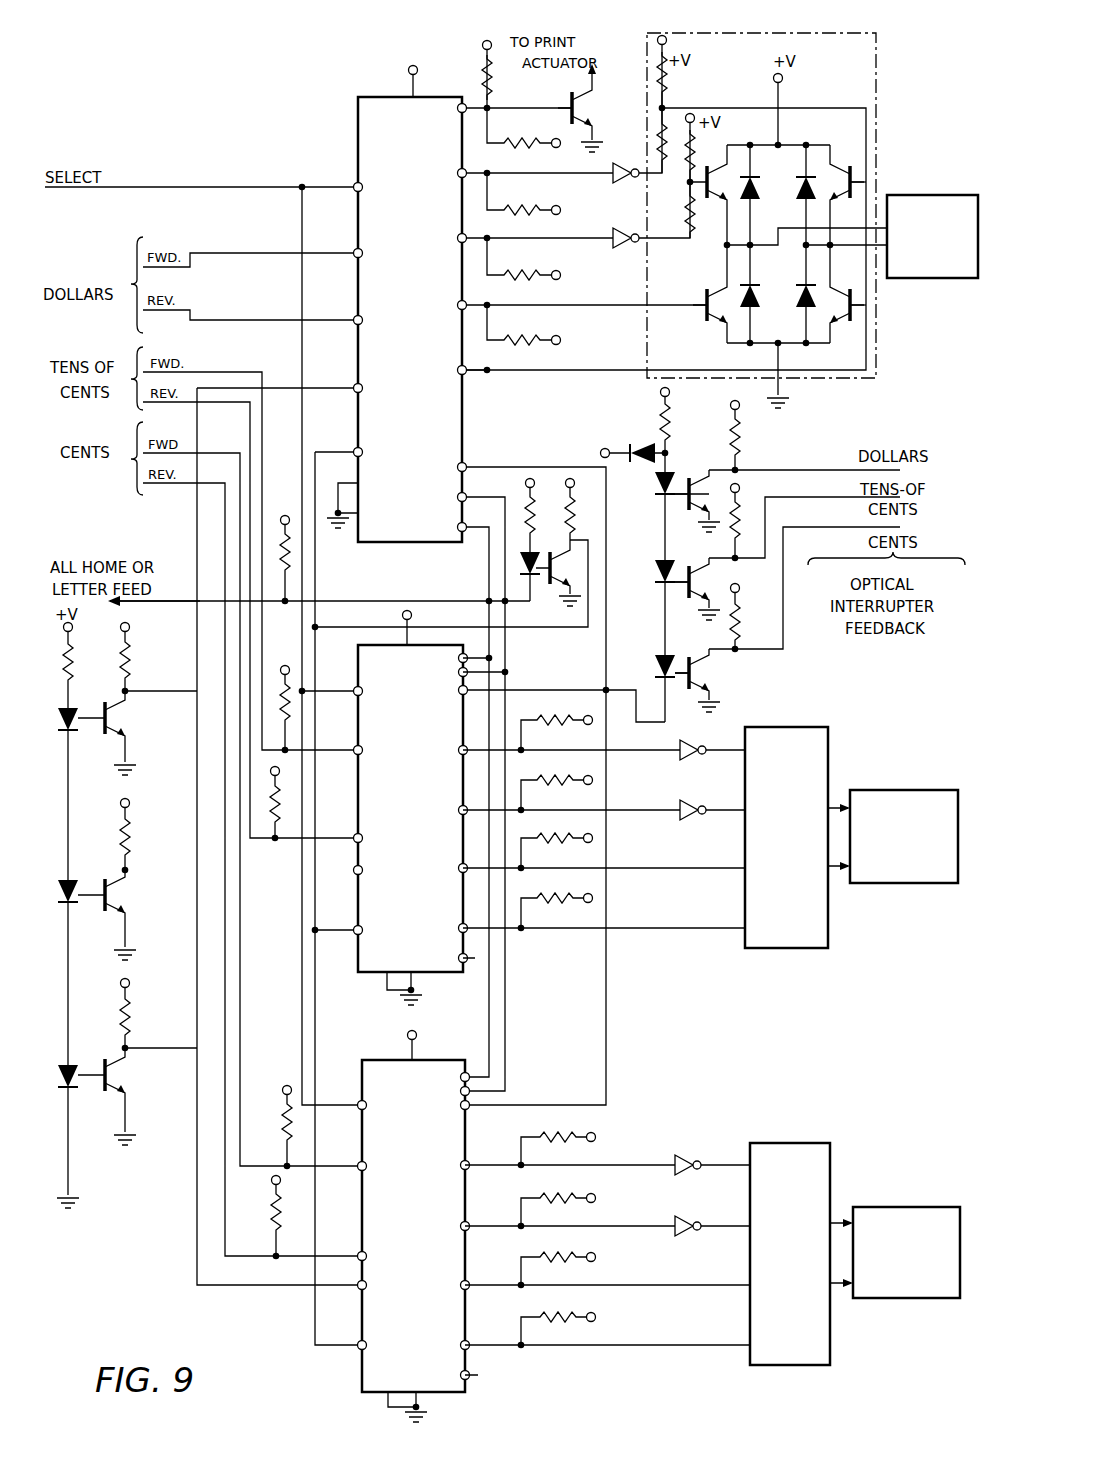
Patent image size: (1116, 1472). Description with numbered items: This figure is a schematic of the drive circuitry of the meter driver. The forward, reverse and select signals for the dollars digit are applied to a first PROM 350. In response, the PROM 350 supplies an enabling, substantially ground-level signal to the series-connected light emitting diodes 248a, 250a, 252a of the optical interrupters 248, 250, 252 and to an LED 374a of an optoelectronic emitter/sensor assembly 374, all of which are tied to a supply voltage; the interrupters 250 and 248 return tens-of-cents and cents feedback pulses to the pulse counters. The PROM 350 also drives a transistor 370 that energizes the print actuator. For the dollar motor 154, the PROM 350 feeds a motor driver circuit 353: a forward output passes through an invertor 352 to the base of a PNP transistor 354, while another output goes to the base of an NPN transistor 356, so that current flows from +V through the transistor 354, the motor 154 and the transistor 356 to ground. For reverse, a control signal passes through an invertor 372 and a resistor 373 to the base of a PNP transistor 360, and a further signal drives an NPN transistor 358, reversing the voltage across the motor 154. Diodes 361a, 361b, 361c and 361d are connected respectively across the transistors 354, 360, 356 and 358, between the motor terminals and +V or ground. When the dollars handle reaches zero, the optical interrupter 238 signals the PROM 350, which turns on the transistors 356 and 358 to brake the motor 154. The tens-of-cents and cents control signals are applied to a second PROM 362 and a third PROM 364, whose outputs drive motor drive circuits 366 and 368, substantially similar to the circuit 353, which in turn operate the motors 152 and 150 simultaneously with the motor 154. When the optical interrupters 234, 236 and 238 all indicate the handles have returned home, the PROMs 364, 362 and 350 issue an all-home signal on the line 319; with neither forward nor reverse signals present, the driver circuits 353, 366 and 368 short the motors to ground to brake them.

The first programmable read only memory (PROM) 350 is at (380, 96).
The transistor 370 is at (582, 96).
The invertor 372 is at (610, 178).
The invertor 352 is at (625, 246).
The motor driver circuit 353 is at (876, 68).
The resistor 373 is at (668, 135).
The PNP transistor 354 is at (715, 206).
The PNP transistor 360 is at (853, 178).
The NPN transistor 358 is at (716, 326).
The NPN transistor 356 is at (856, 326).
The diode 361a is at (751, 172).
The diode 361b is at (808, 172).
The diode 361c is at (806, 290).
The diode 361d is at (745, 292).
The motor 154 is at (975, 195).
The light emitting diode (LED) 252a is at (674, 477).
The light emitting diode (LED) 250a is at (655, 572).
The light emitting diode (LED) 248a is at (655, 667).
The optical interrupter 252 is at (705, 472).
The optical interrupter 250 is at (712, 573).
The optical interrupter 248 is at (710, 668).
The LED 374a is at (520, 565).
The optoelectronic emitter/sensor assembly 374 is at (576, 590).
The line 319 is at (144, 603).
The optical interrupter 238 is at (80, 704).
The optical interrupter 236 is at (80, 877).
The optical interrupter 234 is at (82, 1060).
The second PROM 362 is at (379, 645).
The motor drive circuit 366 is at (805, 727).
The motor 152 is at (938, 748).
The third PROM 364 is at (432, 1060).
The motor drive circuit 368 is at (807, 1143).
The motor 150 is at (912, 1207).